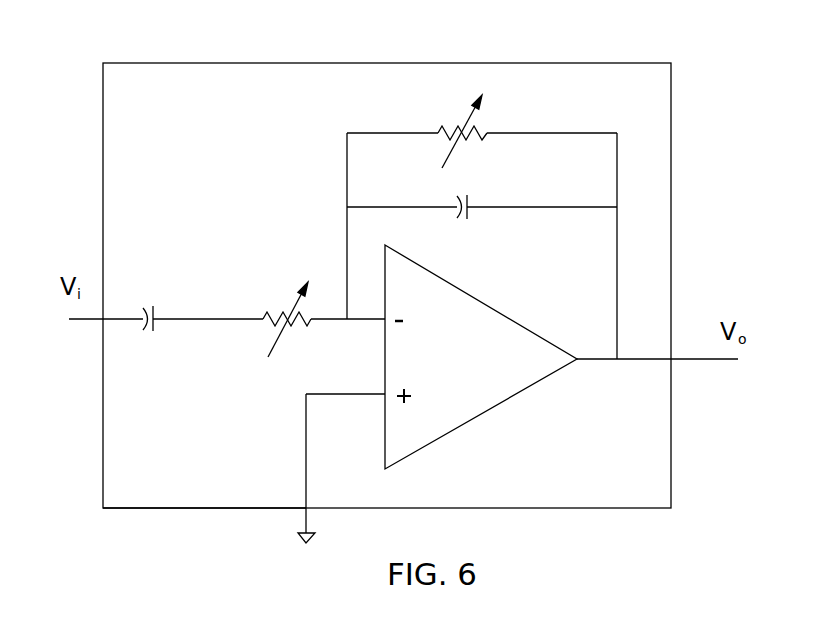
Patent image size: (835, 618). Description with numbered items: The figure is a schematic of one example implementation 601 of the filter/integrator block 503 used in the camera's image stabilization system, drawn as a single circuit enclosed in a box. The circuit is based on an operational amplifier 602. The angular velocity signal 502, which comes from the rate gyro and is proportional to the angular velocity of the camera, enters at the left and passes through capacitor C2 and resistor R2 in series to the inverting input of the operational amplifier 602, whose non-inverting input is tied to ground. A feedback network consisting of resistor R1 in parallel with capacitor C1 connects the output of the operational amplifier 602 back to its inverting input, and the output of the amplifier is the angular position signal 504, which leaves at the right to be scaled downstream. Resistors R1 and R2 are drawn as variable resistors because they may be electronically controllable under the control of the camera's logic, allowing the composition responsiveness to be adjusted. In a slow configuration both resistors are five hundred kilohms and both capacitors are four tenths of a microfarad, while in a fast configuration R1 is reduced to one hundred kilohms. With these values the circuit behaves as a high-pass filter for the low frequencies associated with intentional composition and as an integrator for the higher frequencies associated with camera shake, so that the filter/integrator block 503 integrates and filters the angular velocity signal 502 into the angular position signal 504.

The example implementation of filter/integrator 601 is at (166, 28).
The operational amplifier 602 is at (483, 410).
The angular velocity signal 502 is at (90, 320).
The filter/integrator block 503 is at (220, 507).
The angular position signal 504 is at (708, 362).
The resistor R1 is at (448, 127).
The resistor R2 is at (276, 312).
The capacitor C1 is at (483, 225).
The capacitor C2 is at (164, 342).